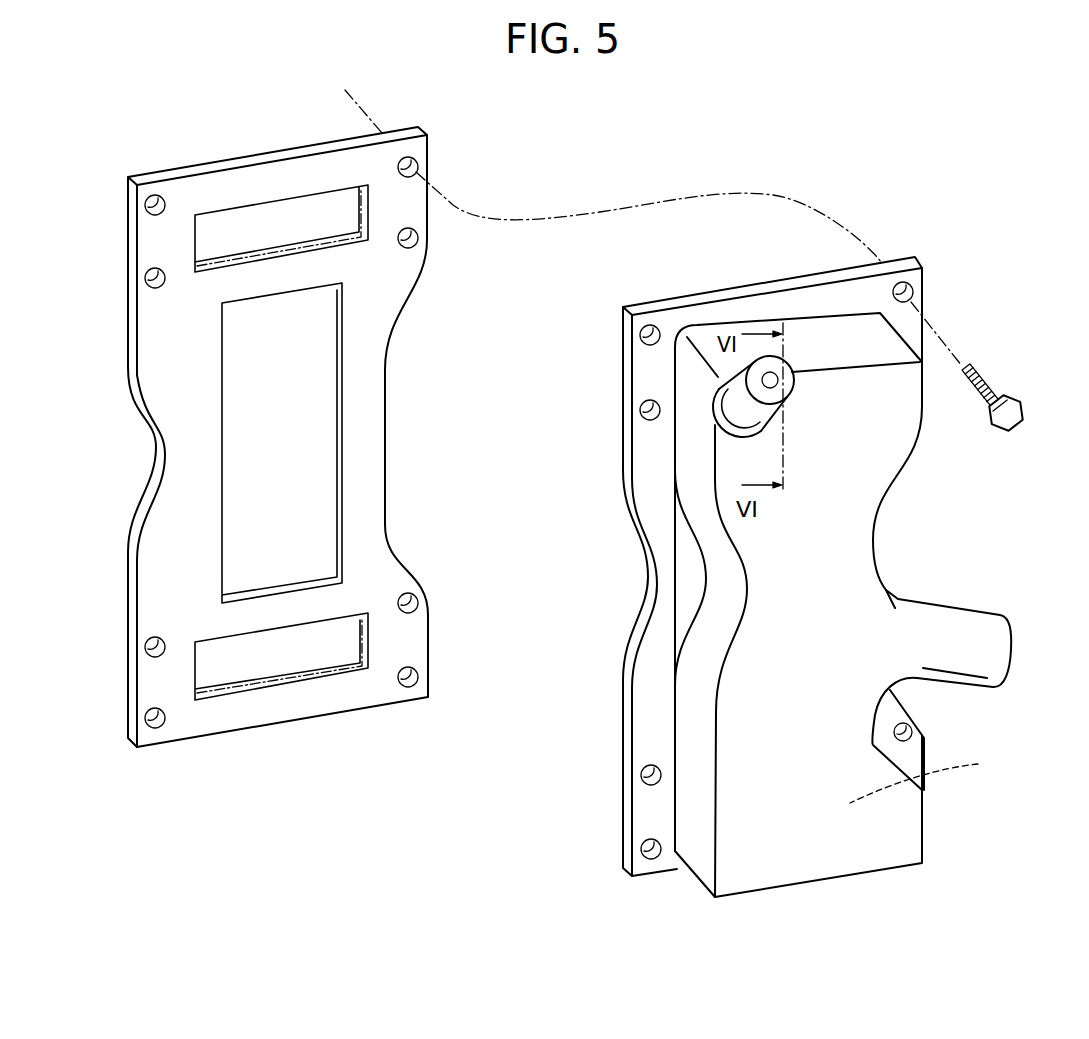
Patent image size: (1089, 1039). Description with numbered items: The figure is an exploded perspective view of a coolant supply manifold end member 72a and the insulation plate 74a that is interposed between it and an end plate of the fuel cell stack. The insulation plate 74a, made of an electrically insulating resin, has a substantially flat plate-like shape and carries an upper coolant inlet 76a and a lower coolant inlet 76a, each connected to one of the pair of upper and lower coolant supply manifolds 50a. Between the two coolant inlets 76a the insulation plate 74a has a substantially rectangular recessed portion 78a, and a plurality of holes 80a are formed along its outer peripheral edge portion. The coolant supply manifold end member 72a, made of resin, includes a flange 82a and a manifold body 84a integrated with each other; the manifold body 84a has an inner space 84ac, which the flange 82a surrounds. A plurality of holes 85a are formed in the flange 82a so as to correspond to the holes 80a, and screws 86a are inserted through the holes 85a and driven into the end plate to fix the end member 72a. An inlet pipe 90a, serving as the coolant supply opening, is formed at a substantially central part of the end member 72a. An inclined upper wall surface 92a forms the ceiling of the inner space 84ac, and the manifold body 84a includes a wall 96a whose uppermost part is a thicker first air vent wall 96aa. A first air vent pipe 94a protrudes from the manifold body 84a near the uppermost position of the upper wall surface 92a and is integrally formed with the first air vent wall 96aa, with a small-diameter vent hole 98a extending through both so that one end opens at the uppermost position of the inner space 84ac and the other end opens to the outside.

The insulation plate 74a is at (150, 173).
The coolant inlet 76a is at (222, 262).
The coolant supply manifold 50a is at (277, 750).
The recessed portion 78a is at (235, 470).
The holes 80a is at (150, 275).
The coolant supply manifold end member 72a is at (782, 550).
The flange 82a is at (646, 714).
The holes 85a is at (913, 292).
The screws 86a is at (1008, 421).
The first air vent pipe 94a is at (695, 412).
The first air vent wall 96aa is at (733, 436).
The vent hole 98a is at (777, 382).
The wall 96a is at (738, 619).
The upper wall surface 92a is at (716, 635).
The manifold body 84a is at (968, 666).
The inlet pipe 90a is at (995, 651).
The inner space 84ac is at (944, 777).